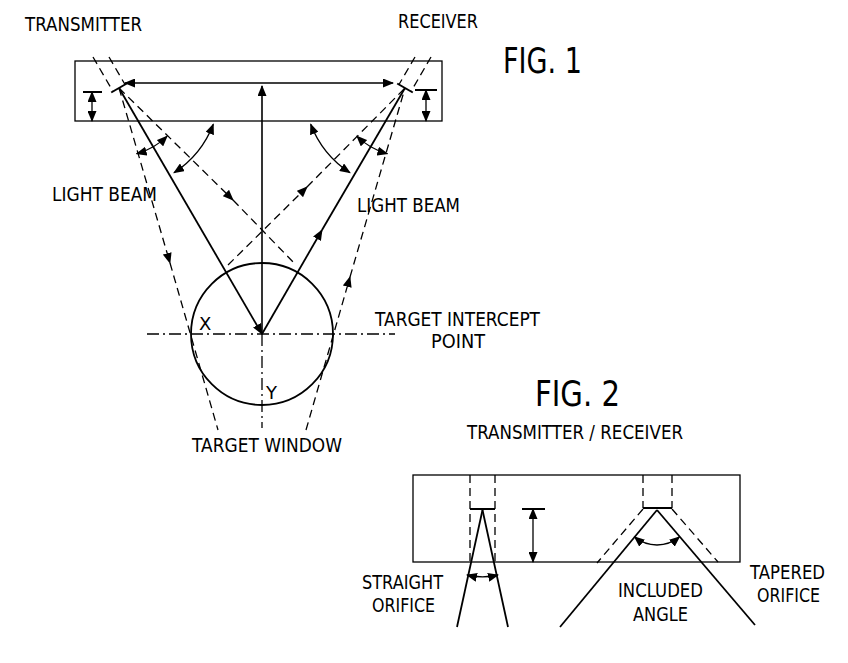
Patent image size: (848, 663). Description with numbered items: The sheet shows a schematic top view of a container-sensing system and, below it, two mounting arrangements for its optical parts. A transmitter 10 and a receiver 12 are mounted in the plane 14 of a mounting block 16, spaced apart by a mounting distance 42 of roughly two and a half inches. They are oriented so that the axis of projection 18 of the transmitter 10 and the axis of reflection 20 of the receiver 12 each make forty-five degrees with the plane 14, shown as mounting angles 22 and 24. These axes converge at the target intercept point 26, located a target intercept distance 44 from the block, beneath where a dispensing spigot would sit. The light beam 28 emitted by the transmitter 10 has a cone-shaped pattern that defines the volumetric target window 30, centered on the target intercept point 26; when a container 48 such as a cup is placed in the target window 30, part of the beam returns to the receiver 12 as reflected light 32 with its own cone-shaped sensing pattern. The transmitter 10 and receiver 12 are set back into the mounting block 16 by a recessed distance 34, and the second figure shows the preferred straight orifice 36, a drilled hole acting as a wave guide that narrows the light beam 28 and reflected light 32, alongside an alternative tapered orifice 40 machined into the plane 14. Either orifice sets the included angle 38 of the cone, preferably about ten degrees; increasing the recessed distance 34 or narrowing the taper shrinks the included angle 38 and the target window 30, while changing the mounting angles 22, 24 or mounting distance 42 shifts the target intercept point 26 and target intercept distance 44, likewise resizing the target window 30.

In FIG. 1, the transmitter 10 is at (103, 63).
In FIG. 2, the transmitter 10 is at (485, 490).
In FIG. 1, the receiver 12 is at (418, 63).
In FIG. 2, the receiver 12 is at (658, 478).
In FIG. 1, the plane 14 is at (441, 123).
In FIG. 2, the plane 14 is at (520, 563).
In FIG. 1, the mounting block 16 is at (325, 109).
In FIG. 2, the mounting block 16 is at (597, 508).
In FIG. 1, the axis of projection 18 is at (192, 215).
In FIG. 1, the axis of reflection 20 is at (330, 215).
In FIG. 1, the mounting angle 22 is at (207, 139).
In FIG. 1, the mounting angle 24 is at (316, 140).
In FIG. 1, the target intercept point 26 is at (262, 334).
In FIG. 1, the light beam 28 is at (201, 264).
In FIG. 2, the light beam 28 is at (508, 652).
In FIG. 1, the volumetric target window 30 is at (242, 372).
In FIG. 1, the reflected light 32 is at (303, 237).
In FIG. 2, the reflected light 32 is at (687, 650).
In FIG. 1, the recessed distance 34 is at (90, 111).
In FIG. 2, the recessed distance 34 is at (536, 538).
In FIG. 2, the straight orifice 36 is at (468, 527).
In FIG. 1, the included angle 38 is at (137, 149).
In FIG. 2, the included angle 38 is at (485, 583).
In FIG. 2, the tapered orifice 40 is at (678, 517).
In FIG. 1, the mounting distance 42 is at (213, 82).
In FIG. 1, the target intercept distance 44 is at (260, 188).
In FIG. 1, the container 48 is at (213, 388).